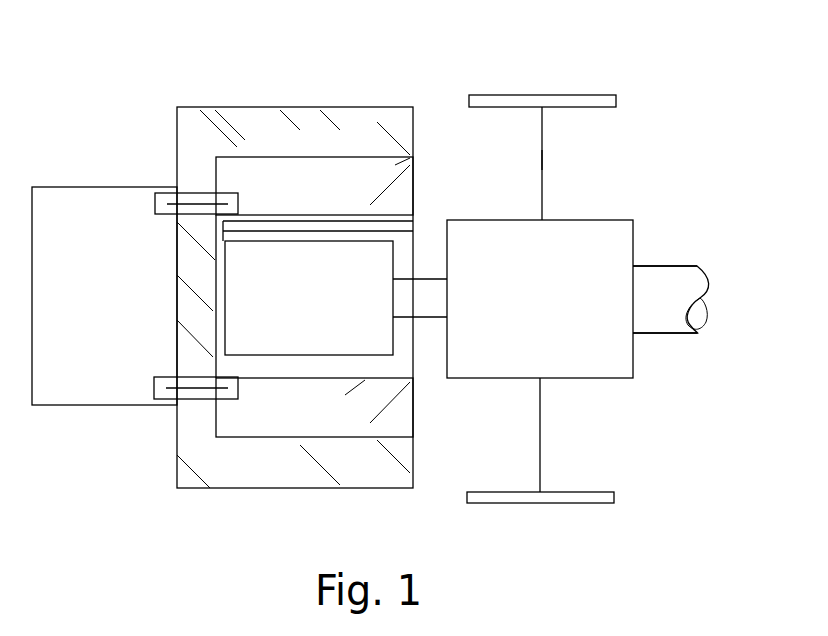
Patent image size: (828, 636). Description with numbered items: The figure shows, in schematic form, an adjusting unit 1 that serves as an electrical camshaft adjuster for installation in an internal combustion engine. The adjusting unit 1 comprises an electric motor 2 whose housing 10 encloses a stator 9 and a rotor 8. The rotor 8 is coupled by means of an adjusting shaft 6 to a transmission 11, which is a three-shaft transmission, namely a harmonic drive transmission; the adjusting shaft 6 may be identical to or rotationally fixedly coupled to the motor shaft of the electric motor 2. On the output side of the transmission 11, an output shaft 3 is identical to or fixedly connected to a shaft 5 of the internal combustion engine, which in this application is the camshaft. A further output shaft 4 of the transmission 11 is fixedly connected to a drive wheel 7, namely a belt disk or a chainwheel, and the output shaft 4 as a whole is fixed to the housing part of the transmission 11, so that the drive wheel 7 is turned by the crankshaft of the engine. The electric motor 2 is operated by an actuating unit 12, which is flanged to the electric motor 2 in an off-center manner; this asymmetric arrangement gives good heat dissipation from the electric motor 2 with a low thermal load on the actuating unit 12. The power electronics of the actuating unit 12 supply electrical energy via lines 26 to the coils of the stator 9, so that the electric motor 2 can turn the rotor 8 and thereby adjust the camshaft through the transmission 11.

The adjusting unit 1 is at (643, 160).
The electric motor 2 is at (333, 85).
The output shaft 3 is at (673, 283).
The shaft 5 is at (665, 299).
The output shaft 4 is at (542, 160).
The adjusting shaft 6 is at (425, 293).
The drive wheel 7 is at (524, 96).
The rotor 8 is at (292, 302).
The stator 9 is at (246, 167).
The housing 10 is at (185, 445).
The transmission 11 is at (556, 312).
The actuating unit 12 is at (90, 312).
The lines 26 is at (196, 200).